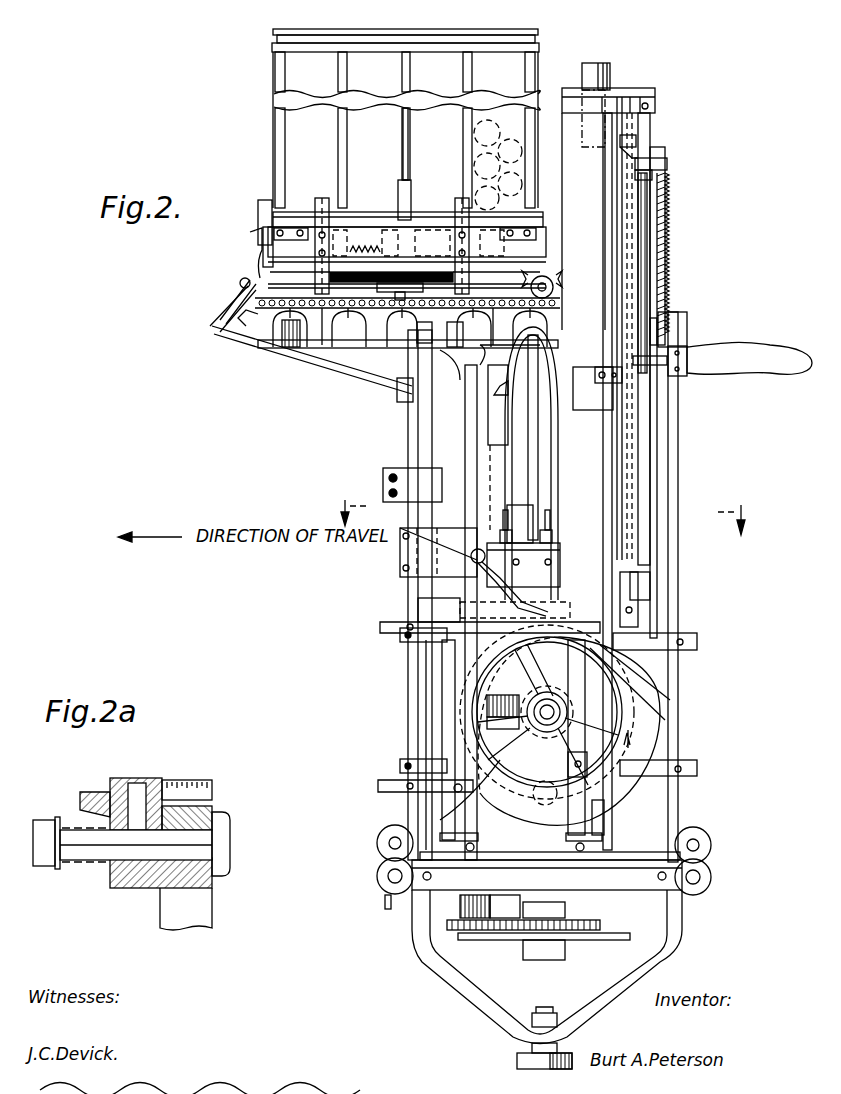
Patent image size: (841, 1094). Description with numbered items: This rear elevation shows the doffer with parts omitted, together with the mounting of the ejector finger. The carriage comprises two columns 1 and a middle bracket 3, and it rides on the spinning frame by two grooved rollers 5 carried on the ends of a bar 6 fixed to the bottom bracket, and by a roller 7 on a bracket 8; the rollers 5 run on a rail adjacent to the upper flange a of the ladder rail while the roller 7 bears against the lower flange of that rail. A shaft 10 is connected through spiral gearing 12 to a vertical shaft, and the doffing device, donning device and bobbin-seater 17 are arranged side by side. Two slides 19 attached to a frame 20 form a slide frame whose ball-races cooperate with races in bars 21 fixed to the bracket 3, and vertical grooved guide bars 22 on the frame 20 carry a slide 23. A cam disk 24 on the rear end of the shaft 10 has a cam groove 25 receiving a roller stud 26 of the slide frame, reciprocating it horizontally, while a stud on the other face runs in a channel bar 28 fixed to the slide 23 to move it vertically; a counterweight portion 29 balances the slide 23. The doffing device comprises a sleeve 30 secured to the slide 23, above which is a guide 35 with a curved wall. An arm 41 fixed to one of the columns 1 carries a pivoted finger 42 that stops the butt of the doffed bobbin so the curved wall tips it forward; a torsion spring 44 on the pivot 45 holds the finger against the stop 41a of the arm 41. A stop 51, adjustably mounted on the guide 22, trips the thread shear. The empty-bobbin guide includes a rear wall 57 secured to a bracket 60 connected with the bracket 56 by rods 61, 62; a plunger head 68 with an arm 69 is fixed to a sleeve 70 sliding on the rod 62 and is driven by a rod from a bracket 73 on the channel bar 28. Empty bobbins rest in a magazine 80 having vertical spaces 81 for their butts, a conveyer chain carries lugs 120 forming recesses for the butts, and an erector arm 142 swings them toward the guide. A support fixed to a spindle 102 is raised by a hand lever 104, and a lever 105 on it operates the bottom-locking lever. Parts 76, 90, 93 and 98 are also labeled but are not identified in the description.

In FIG. 2, the columns 1 is at (408, 422).
In FIG. 2, the middle bracket 3 is at (703, 670).
In FIG. 2, the grooved rollers 5 is at (378, 878).
In FIG. 2, the bar 6 is at (418, 892).
In FIG. 2, the roller 7 is at (517, 1056).
In FIG. 2, the bracket 8 is at (468, 988).
In FIG. 2, the shaft 10 is at (533, 718).
In FIG. 2, the spiral gearing 12 is at (342, 335).
In FIG. 2, the bobbin-seater 17 is at (665, 266).
In FIG. 2, the slides 19 is at (380, 622).
In FIG. 2, the frame 20 is at (440, 676).
In FIG. 2, the bars 21 is at (398, 648).
In FIG. 2, the guide bars 22 is at (505, 791).
In FIG. 2, the slide 23 is at (442, 366).
In FIG. 2, the cam disk 24 is at (638, 676).
In FIG. 2, the cam groove 25 is at (683, 700).
In FIG. 2, the roller stud 26 is at (650, 712).
In FIG. 2, the channel bar 28 is at (418, 612).
In FIG. 2, the counterweight portion 29 is at (440, 820).
In FIG. 2, the sleeve 30 is at (560, 554).
In FIG. 2, the guide 35 is at (507, 432).
In FIG. 2, the arm 41 is at (407, 545).
In FIG. 2A, the stop 41a is at (185, 792).
In FIG. 2, the finger 42 is at (495, 604).
In FIG. 2A, the finger 42 is at (185, 908).
In FIG. 2A, the torsion spring 44 is at (78, 868).
In FIG. 2A, the pivot 45 is at (190, 842).
In FIG. 2, the stop 51 is at (586, 792).
In FIG. 2, the bracket 56 is at (595, 396).
In FIG. 2, the rear wall 57 is at (563, 160).
In FIG. 2, the bracket 60 is at (627, 90).
In FIG. 2, the rod 61 is at (613, 502).
In FIG. 2, the rod 62 is at (650, 123).
In FIG. 2, the plunger head 68 is at (598, 62).
In FIG. 2, the arm 69 is at (630, 148).
In FIG. 2, the sleeve 70 is at (666, 192).
In FIG. 2, the bracket 73 is at (650, 604).
In FIG. 2, the collar 76 is at (667, 166).
In FIG. 2, the magazine 80 is at (389, 119).
In FIG. 2, the vertical spaces 81 is at (308, 58).
In FIG. 2, the feed box 90 is at (273, 214).
In FIG. 2, the rod 93 is at (411, 200).
In FIG. 2, the clamps 98 is at (264, 198).
In FIG. 2, the spindle 102 is at (397, 397).
In FIG. 2, the hand lever 104 is at (215, 338).
In FIG. 2, the lever 105 is at (225, 312).
In FIG. 2, the lugs 120 is at (262, 244).
In FIG. 2, the erector arm 142 is at (663, 310).
In FIG. 2, the upper flange a is at (736, 347).